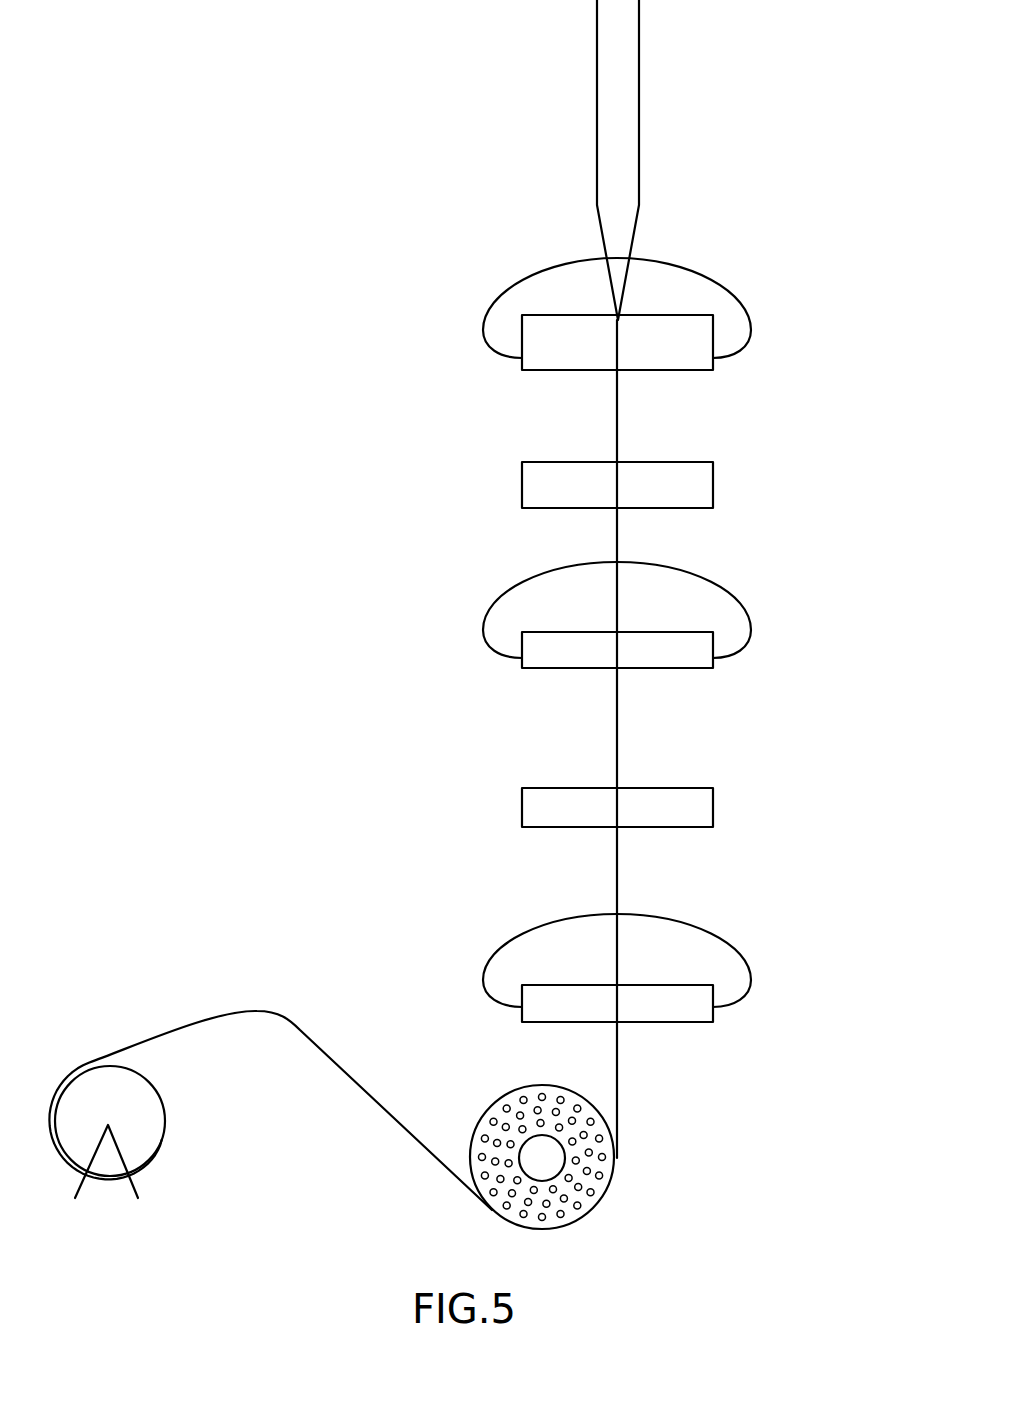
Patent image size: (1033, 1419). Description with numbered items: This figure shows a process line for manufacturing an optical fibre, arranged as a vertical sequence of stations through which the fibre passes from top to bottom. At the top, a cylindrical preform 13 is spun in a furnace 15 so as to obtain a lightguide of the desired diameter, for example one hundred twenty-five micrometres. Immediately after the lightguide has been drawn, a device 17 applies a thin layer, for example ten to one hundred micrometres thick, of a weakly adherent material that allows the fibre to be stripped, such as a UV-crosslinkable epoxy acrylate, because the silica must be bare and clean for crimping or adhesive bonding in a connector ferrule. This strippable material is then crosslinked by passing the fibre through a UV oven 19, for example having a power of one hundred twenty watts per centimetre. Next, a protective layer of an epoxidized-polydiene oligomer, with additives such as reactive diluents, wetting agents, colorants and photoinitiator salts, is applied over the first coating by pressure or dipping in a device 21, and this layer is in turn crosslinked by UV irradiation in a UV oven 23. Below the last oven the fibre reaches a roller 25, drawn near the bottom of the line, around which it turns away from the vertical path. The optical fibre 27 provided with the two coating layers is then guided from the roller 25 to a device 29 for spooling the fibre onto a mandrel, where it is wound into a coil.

The cylindrical preform 13 is at (623, 132).
The furnace 15 is at (553, 371).
The device for applying weakly adherent material 17 is at (540, 483).
The UV oven 19 is at (553, 669).
The device for applying protective layer 21 is at (540, 810).
The UV oven 23 is at (553, 1023).
The perforated take-up roller 25 is at (602, 1167).
The optical fibre 27 is at (365, 1105).
The device for spooling 29 is at (109, 1163).